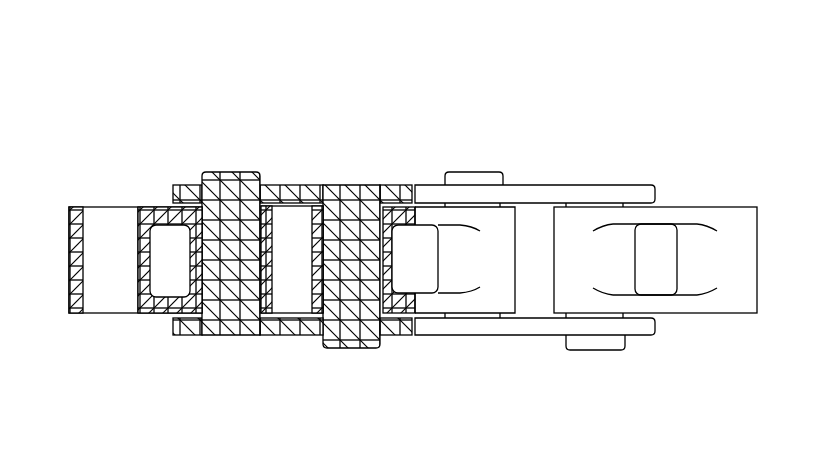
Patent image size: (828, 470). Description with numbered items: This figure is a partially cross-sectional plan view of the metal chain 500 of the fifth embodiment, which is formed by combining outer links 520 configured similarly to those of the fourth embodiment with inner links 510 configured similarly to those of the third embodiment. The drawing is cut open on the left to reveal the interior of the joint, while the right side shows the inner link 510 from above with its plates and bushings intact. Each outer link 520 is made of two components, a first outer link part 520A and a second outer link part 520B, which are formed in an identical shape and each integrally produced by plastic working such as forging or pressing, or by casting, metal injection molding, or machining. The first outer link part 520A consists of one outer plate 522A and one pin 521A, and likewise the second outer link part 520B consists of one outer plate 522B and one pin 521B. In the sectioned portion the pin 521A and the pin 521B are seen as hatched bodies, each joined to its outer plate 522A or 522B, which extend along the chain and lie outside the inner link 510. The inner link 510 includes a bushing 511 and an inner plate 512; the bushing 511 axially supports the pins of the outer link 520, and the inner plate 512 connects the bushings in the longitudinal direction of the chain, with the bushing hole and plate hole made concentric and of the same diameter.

The metal chain 500 is at (83, 77).
The inner link 510 is at (405, 253).
The bushing 511 is at (77, 300).
The inner plate 512 is at (158, 214).
The outer link 520 is at (535, 172).
The first outer link part 520A is at (382, 97).
The pin 521A is at (345, 235).
The outer plate 522A is at (284, 196).
The second outer link part 520B is at (350, 413).
The pin 521B is at (238, 305).
The outer plate 522B is at (297, 323).